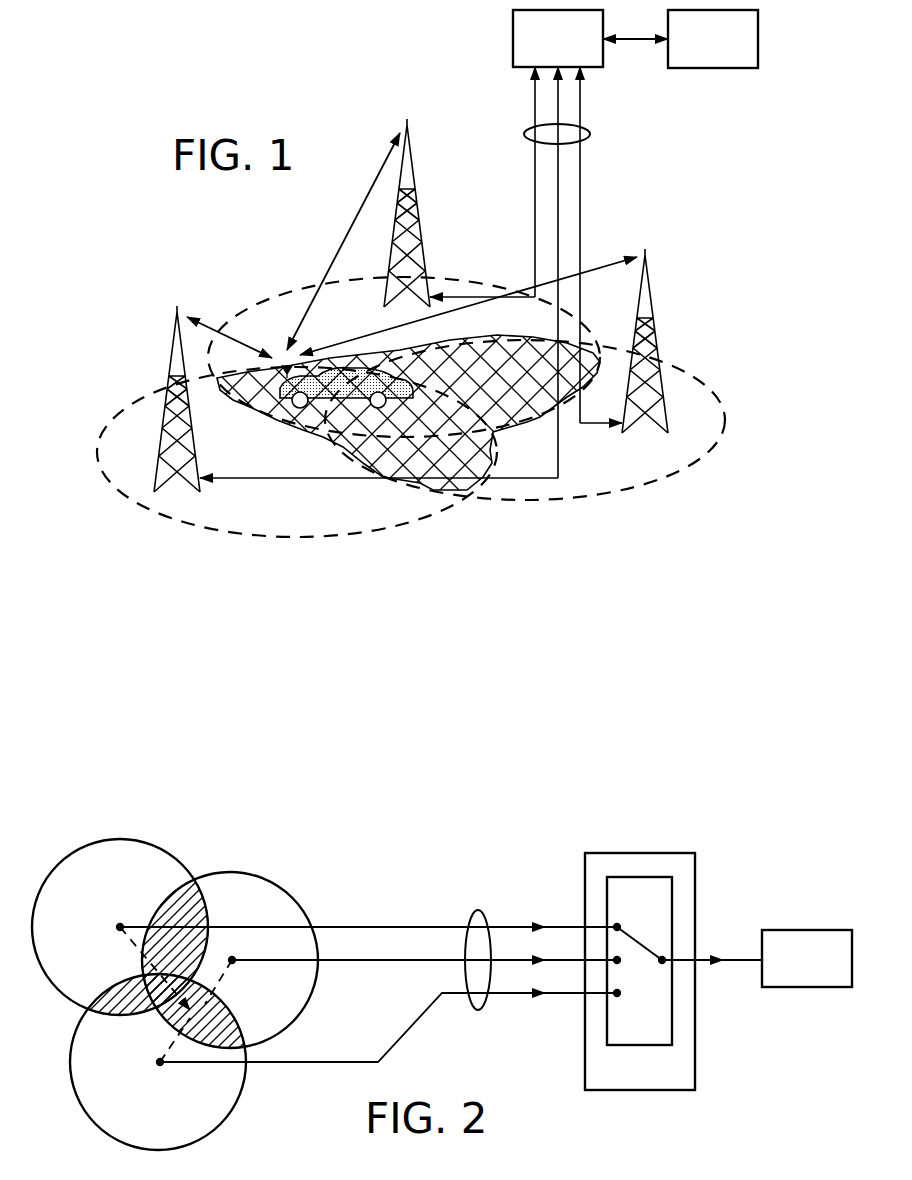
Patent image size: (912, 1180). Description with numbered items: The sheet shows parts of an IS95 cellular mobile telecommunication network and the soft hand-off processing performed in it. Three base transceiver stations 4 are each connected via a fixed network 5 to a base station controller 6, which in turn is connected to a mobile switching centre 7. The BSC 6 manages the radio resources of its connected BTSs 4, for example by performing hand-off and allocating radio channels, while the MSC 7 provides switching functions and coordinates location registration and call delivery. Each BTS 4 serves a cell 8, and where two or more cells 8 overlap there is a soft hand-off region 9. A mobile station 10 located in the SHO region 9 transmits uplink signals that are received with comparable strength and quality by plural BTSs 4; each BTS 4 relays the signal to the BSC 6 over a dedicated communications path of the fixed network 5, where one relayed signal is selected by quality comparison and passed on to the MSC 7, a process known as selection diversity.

In FIG. 1, the base transceiver station 4 is at (410, 182).
In FIG. 2, the base transceiver station 4 is at (103, 930).
In FIG. 1, the fixed network 5 is at (590, 136).
In FIG. 2, the fixed network 5 is at (483, 910).
In FIG. 1, the base station controller 6 is at (513, 28).
In FIG. 2, the base station controller 6 is at (648, 853).
In FIG. 1, the mobile switching centre 7 is at (718, 68).
In FIG. 2, the mobile switching centre 7 is at (807, 930).
In FIG. 1, the cell 8 is at (285, 282).
In FIG. 2, the cell 8 is at (303, 908).
In FIG. 1, the soft hand-off region 9 is at (450, 462).
In FIG. 2, the soft hand-off region 9 is at (207, 887).
In FIG. 1, the mobile station 10 is at (300, 409).
In FIG. 2, the mobile station 10 is at (173, 1027).